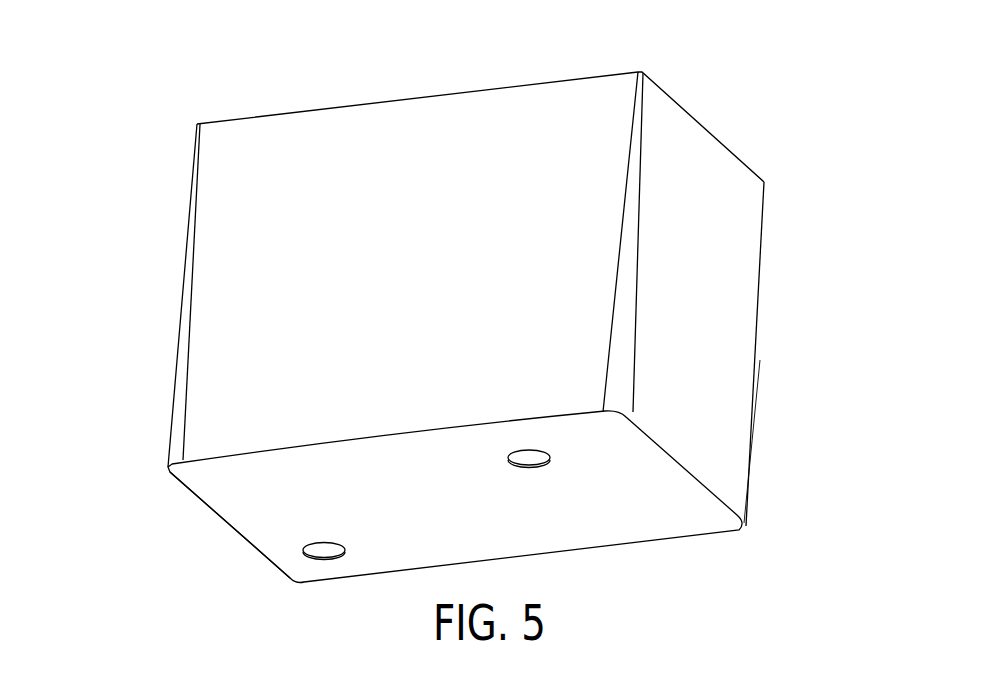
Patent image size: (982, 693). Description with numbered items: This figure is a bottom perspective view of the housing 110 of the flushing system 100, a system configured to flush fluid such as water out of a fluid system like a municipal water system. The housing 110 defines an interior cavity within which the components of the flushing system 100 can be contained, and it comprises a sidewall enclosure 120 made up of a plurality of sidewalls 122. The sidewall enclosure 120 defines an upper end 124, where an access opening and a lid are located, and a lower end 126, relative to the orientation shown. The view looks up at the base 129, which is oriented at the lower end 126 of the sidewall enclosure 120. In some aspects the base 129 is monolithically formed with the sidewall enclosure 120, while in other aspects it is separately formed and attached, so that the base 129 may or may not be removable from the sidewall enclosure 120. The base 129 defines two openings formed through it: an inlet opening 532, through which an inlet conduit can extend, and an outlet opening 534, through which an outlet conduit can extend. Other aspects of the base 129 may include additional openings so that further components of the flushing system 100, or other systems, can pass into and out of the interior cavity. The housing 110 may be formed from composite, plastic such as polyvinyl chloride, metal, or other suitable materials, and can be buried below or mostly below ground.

The flushing system 100 is at (168, 69).
The housing 110 is at (811, 208).
The sidewall enclosure 120 is at (120, 282).
The sidewalls 122 is at (208, 218).
The upper end 124 is at (303, 107).
The lower end 126 is at (210, 455).
The base 129 is at (208, 502).
The inlet opening 532 is at (320, 577).
The outlet opening 534 is at (533, 480).